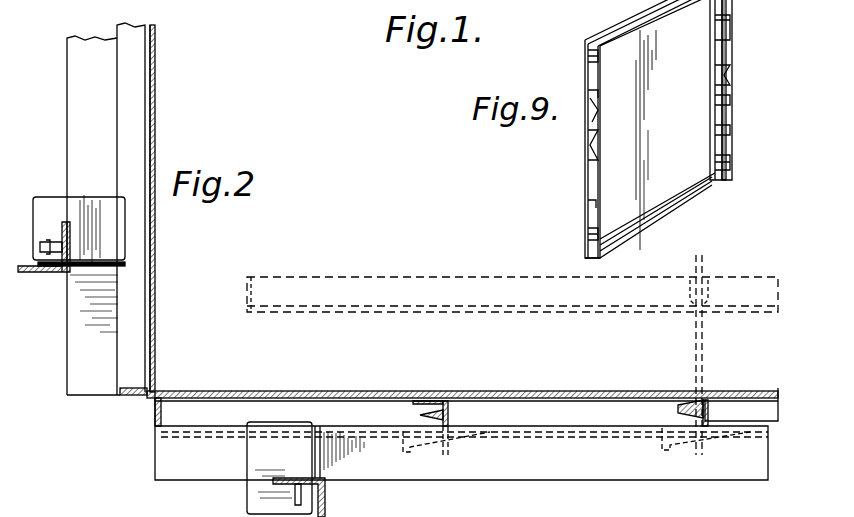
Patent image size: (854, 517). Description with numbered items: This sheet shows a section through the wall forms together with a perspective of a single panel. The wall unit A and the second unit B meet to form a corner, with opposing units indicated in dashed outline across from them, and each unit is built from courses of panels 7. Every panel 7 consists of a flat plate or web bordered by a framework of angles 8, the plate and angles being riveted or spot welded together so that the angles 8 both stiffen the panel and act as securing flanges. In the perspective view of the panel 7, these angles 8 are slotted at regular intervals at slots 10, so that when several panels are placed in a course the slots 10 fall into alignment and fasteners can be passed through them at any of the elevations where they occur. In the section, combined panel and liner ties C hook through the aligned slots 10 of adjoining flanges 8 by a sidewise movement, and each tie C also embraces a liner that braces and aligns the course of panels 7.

In FIG. 2, the panel 7 is at (156, 118).
In FIG. 2, the angle 8 is at (153, 412).
In FIG. 9, the slot 10 is at (727, 38).
In FIG. 2, the wall unit A is at (292, 375).
In FIG. 2, the second unit B is at (169, 240).
In FIG. 2, the combined panel and liner tie C is at (576, 428).